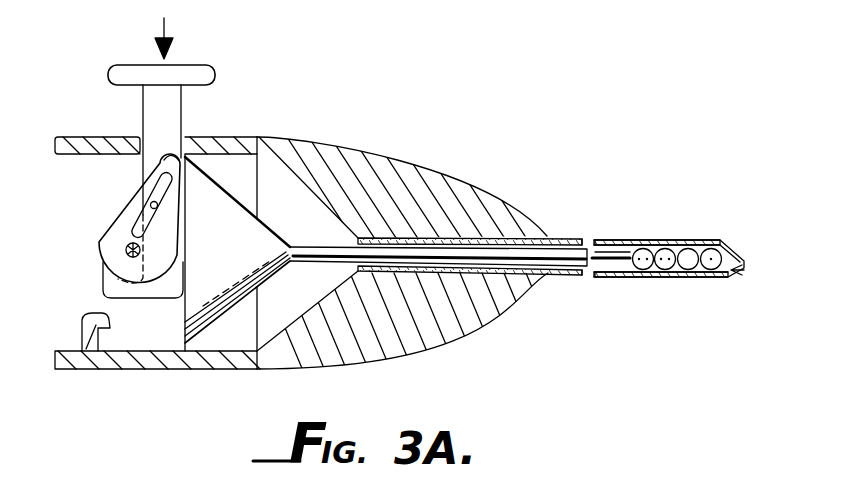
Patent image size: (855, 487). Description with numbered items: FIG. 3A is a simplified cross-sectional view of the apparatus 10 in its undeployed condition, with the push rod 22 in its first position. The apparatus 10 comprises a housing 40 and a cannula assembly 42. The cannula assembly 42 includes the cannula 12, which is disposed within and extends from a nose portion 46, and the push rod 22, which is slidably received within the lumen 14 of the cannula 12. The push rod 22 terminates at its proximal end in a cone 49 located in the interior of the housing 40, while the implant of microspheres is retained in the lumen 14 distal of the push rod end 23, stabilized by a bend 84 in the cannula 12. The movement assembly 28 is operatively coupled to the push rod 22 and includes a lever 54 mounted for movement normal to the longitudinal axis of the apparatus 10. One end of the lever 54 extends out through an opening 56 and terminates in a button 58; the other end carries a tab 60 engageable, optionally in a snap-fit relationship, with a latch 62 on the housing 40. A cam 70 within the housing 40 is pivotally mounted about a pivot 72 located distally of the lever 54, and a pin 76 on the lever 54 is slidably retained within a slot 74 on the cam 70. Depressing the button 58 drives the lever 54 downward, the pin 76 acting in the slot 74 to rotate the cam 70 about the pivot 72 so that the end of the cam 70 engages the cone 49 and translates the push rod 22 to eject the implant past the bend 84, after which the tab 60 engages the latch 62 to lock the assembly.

The apparatus 10 is at (424, 215).
The cannula 12 is at (664, 277).
The lumen 14 is at (735, 278).
The push rod 22 is at (238, 208).
The push rod end 23 is at (600, 278).
The movement assembly 28 is at (220, 132).
The housing 40 is at (267, 372).
The cannula assembly 42 is at (311, 130).
The nose portion 46 is at (497, 196).
The cone 49 is at (183, 312).
The lever 54 is at (188, 105).
The opening 56 is at (137, 147).
The button 58 is at (123, 66).
The tab 60 is at (100, 281).
The latch 62 is at (90, 313).
The cam 70 is at (124, 214).
The pivot 72 is at (127, 247).
The slot 74 is at (166, 156).
The pin 76 is at (156, 190).
The bend 84 is at (743, 270).